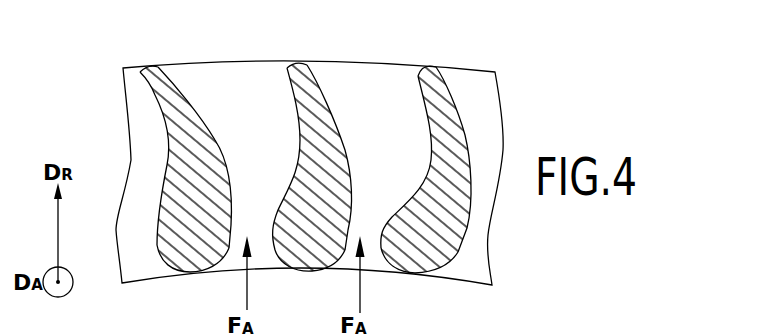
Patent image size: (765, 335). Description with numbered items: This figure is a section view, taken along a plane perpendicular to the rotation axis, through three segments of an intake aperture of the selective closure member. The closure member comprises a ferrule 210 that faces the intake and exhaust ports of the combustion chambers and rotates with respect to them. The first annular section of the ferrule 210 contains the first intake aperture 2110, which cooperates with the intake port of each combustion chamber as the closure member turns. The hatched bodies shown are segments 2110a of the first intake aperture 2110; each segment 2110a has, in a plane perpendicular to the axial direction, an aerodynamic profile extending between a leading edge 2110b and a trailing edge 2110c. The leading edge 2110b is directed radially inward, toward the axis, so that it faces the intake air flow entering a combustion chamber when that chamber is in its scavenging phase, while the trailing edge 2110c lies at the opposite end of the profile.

The ferrule 210 is at (344, 142).
The first intake aperture 2110 is at (487, 103).
The segments of the first intake aperture 2110a is at (194, 134).
The leading edge 2110b is at (184, 274).
The trailing edge 2110c is at (153, 68).